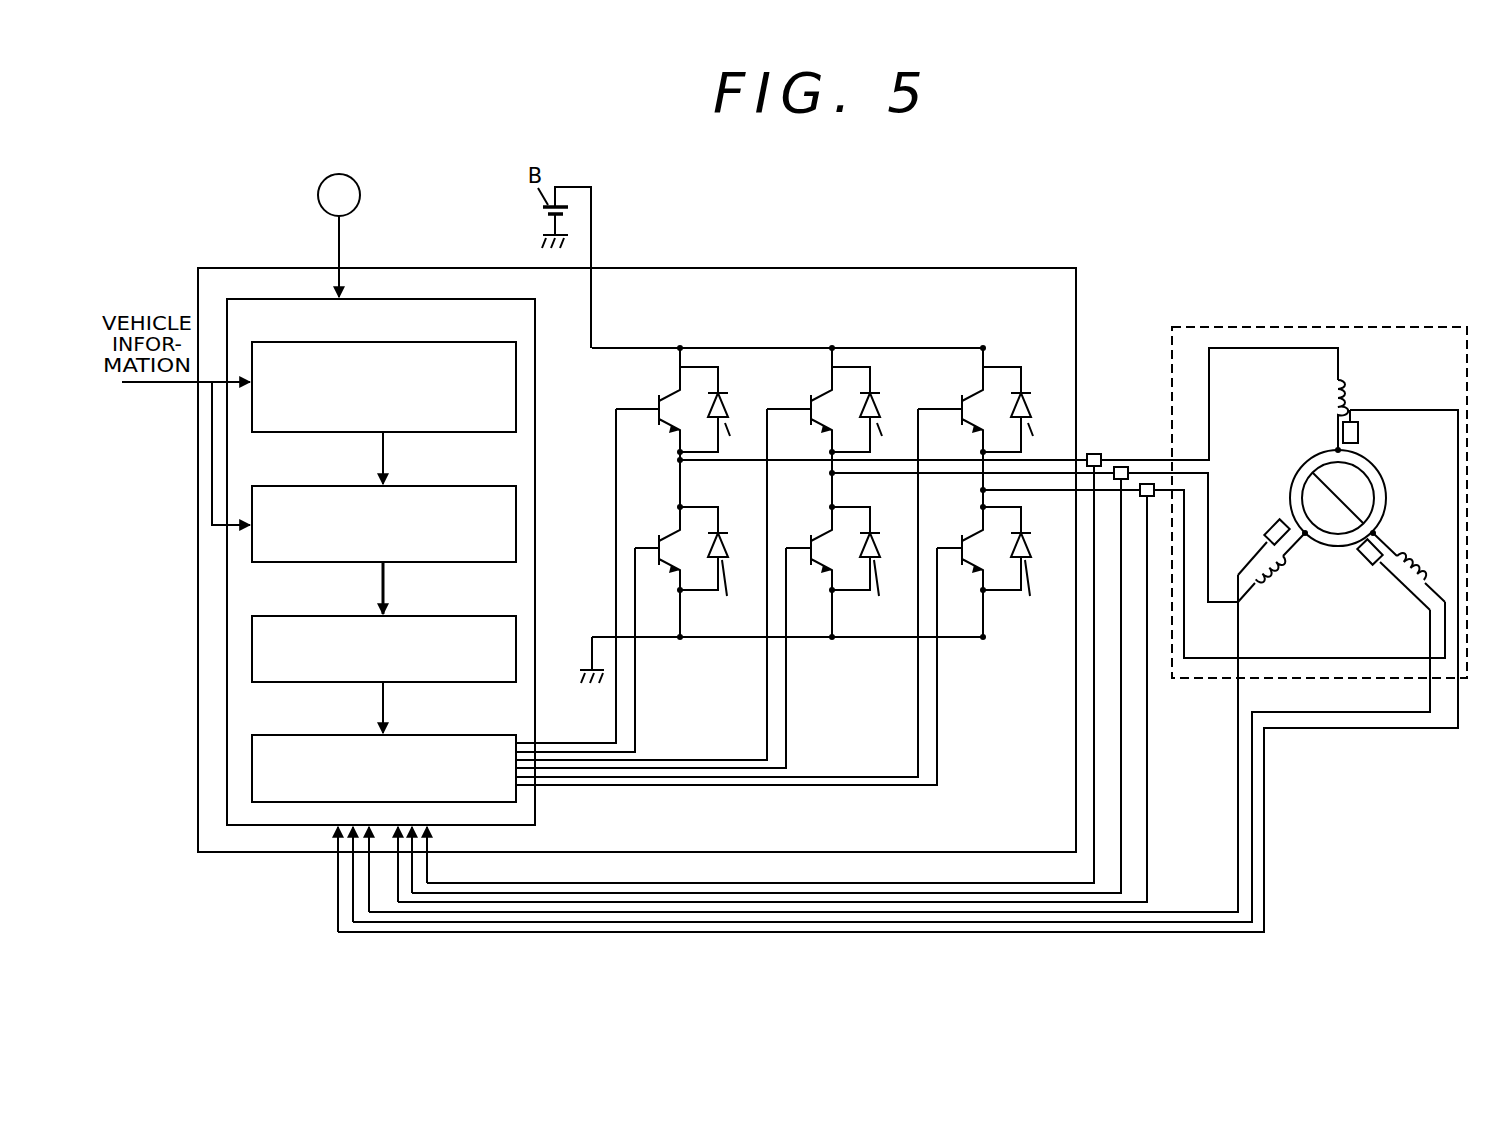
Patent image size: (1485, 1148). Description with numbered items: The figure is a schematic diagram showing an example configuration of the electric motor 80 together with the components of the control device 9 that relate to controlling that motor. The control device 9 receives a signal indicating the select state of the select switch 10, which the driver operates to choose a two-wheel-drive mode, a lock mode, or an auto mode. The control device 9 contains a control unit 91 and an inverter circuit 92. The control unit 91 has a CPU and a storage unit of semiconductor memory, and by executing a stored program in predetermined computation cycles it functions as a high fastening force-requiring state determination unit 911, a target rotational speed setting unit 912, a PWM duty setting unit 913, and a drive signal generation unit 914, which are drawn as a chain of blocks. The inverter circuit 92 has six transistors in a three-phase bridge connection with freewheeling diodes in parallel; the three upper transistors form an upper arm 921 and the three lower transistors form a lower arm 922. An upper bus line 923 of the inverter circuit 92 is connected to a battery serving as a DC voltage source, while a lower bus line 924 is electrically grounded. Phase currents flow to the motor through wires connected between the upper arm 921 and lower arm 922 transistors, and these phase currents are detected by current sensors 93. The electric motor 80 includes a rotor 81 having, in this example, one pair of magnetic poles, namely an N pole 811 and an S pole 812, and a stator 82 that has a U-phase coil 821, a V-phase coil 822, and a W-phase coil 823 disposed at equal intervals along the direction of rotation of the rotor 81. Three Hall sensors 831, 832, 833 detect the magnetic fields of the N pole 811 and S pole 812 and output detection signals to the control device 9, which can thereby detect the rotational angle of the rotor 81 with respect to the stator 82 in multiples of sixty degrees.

The control device 9 is at (1030, 268).
The select switch 10 is at (353, 174).
The control unit 91 is at (470, 297).
The high fastening force-requiring state determination unit 911 is at (484, 342).
The target rotational speed setting unit 912 is at (484, 486).
The PWM duty setting unit 913 is at (484, 616).
The drive signal generation unit 914 is at (484, 735).
The inverter circuit 92 is at (945, 340).
The upper arm 921 is at (630, 394).
The lower arm 922 is at (650, 486).
The upper bus line 923 is at (648, 348).
The lower bus line 924 is at (658, 642).
The current sensors 93 is at (1145, 484).
The electric motor 80 is at (1388, 327).
The rotor 81 is at (1382, 476).
The N pole 811 is at (1320, 468).
The S pole 812 is at (1302, 496).
The stator 82 is at (1322, 375).
The U-phase coil 821 is at (1358, 397).
The V-phase coil 822 is at (1275, 562).
The W-phase coil 823 is at (1405, 573).
The Hall sensor 831 is at (1362, 436).
The Hall sensor 832 is at (1268, 528).
The Hall sensor 833 is at (1368, 565).